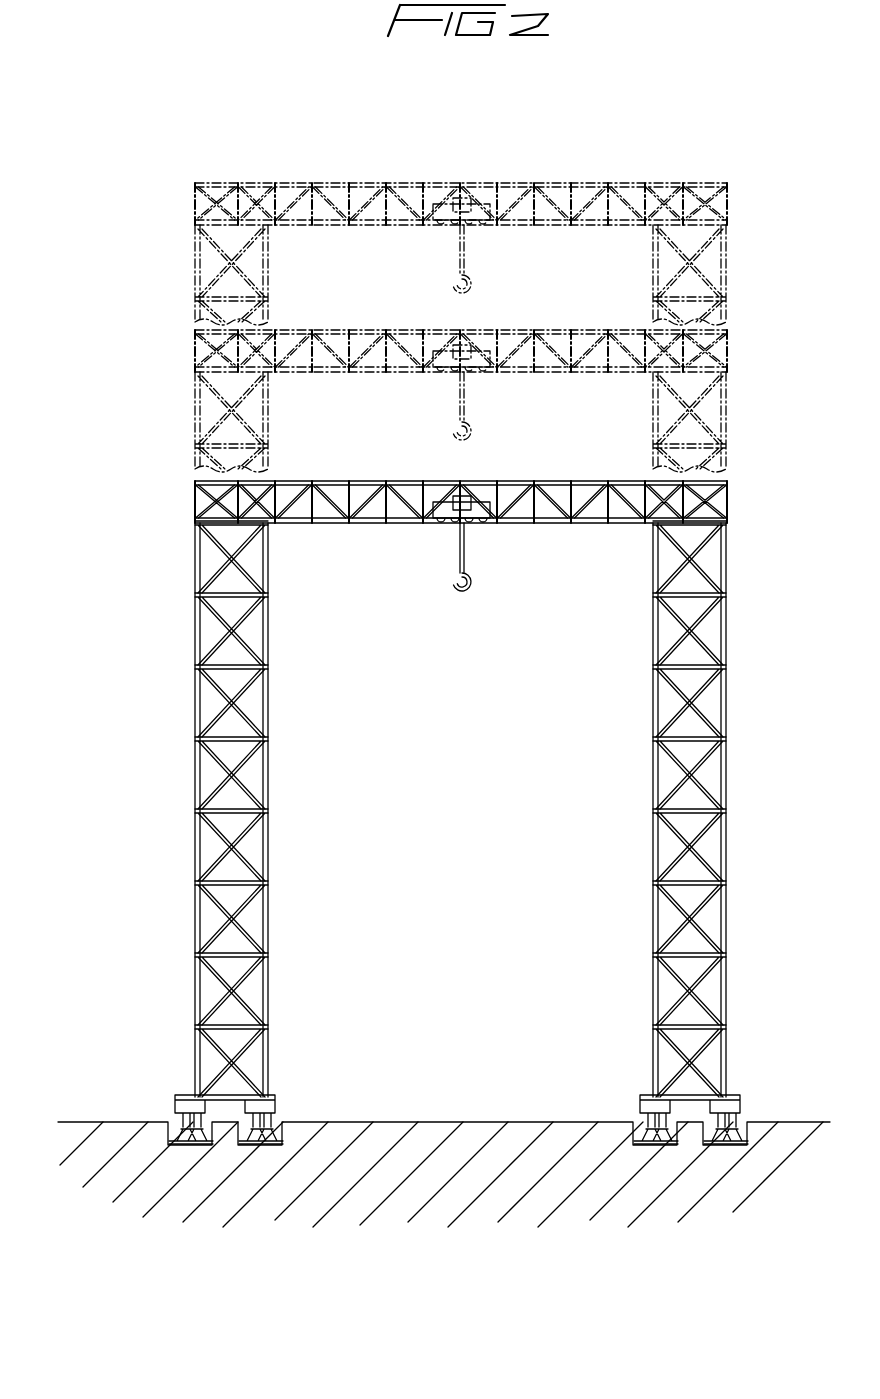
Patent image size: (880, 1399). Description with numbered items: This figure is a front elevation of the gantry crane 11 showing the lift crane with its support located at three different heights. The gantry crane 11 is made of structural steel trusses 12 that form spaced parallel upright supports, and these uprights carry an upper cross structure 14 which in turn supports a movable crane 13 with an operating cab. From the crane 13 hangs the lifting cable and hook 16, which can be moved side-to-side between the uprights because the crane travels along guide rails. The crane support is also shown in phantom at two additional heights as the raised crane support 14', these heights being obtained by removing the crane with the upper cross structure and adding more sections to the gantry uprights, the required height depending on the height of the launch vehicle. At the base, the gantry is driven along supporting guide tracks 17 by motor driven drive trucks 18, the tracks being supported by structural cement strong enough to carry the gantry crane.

The gantry crane 11 is at (458, 687).
The structural steel trusses 12 is at (268, 763).
The movable crane 13 is at (480, 516).
The upper cross structure 14 is at (461, 539).
The crane support at alternate height 14' is at (461, 327).
The lifting cable and hook 16 is at (456, 566).
The supporting tracks 17 is at (633, 1143).
The drive trucks 18 is at (250, 1134).